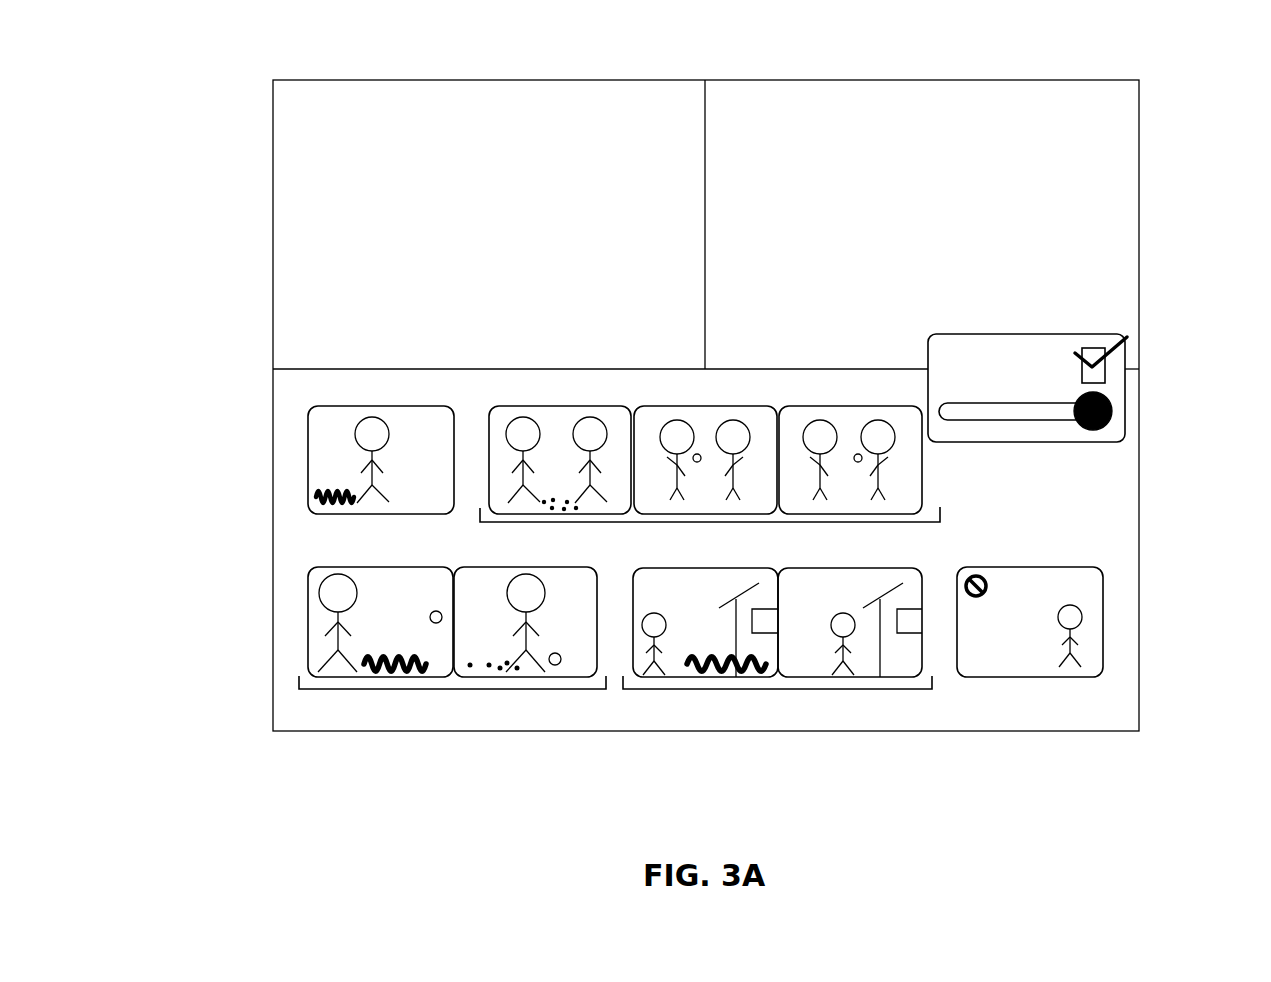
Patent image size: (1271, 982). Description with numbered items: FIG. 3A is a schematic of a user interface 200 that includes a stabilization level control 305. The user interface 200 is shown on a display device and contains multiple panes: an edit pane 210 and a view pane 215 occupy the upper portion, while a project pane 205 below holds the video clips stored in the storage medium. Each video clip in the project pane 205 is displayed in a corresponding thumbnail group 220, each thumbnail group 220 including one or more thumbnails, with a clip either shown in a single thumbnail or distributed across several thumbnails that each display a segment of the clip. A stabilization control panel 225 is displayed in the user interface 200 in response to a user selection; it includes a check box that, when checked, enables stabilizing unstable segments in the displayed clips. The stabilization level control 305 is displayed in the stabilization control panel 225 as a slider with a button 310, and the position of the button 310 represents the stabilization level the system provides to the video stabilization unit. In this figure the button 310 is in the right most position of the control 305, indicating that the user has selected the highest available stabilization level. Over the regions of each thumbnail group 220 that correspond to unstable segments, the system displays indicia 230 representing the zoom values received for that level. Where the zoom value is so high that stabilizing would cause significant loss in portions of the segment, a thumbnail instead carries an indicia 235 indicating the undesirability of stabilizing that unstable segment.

The user interface 200 is at (1139, 117).
The project pane 205 is at (1102, 477).
The edit pane 210 is at (345, 80).
The view pane 215 is at (777, 80).
The thumbnail group 220 is at (724, 593).
The stabilization control panel 225 is at (1093, 346).
The indicia 230 is at (318, 493).
The indicia 235 is at (1112, 605).
The stabilization level control 305 is at (1098, 424).
The button 310 is at (1166, 394).